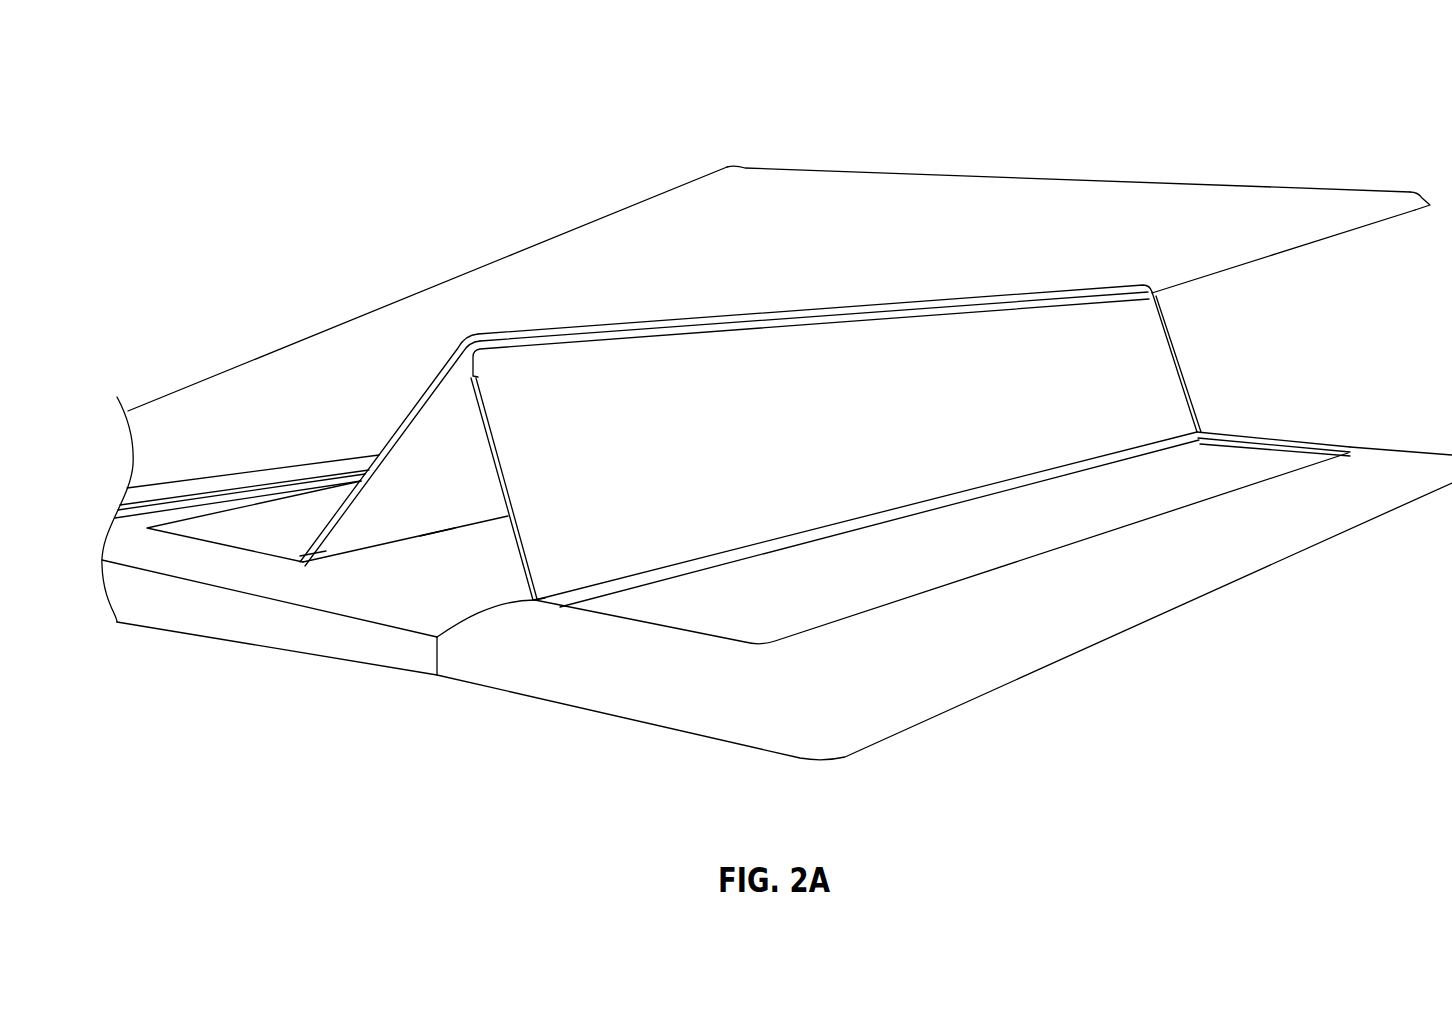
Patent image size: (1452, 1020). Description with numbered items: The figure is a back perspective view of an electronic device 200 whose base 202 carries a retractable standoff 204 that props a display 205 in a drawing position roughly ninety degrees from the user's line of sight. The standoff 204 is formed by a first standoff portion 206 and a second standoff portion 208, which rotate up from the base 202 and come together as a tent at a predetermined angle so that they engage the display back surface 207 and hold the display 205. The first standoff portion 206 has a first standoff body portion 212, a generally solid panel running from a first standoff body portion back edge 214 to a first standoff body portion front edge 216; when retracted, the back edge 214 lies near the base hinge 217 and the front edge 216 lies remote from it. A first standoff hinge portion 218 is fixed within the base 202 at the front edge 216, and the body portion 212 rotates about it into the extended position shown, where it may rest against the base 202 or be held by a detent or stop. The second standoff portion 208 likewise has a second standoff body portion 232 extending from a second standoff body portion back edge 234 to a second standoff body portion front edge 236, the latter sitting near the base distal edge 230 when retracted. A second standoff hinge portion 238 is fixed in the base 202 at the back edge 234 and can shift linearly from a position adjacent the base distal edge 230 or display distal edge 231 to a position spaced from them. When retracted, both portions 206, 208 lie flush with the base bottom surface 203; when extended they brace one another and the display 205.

The electronic device 200 is at (1163, 98).
The base 202 is at (582, 690).
The base bottom surface 203 is at (478, 612).
The retractable standoff 204 is at (618, 303).
The display 205 is at (507, 277).
The first standoff portion 206 is at (377, 522).
The display back surface 207 is at (981, 241).
The second standoff portion 208 is at (711, 449).
The first standoff body portion 212 is at (436, 518).
The first standoff body portion back edge 214 is at (478, 334).
The first standoff body portion front edge 216 is at (323, 550).
The base hinge 217 is at (225, 497).
The first standoff hinge portion 218 is at (303, 567).
The base distal edge 230 is at (1100, 633).
The display distal edge 231 is at (1400, 203).
The second standoff body portion 232 is at (800, 345).
The second standoff body portion back edge 234 is at (537, 594).
The second standoff body portion front edge 236 is at (533, 342).
The second standoff hinge portion 238 is at (667, 572).